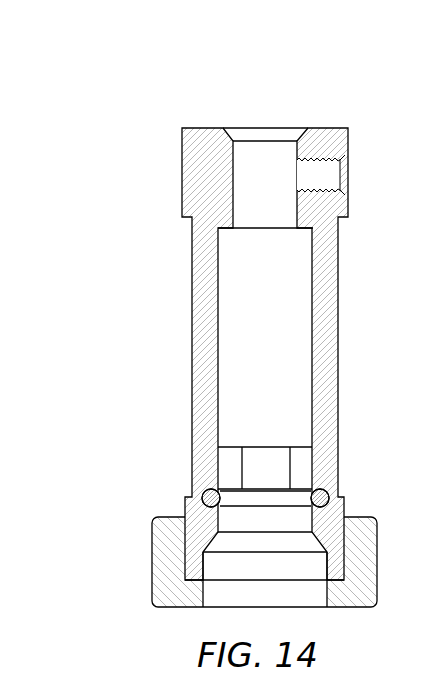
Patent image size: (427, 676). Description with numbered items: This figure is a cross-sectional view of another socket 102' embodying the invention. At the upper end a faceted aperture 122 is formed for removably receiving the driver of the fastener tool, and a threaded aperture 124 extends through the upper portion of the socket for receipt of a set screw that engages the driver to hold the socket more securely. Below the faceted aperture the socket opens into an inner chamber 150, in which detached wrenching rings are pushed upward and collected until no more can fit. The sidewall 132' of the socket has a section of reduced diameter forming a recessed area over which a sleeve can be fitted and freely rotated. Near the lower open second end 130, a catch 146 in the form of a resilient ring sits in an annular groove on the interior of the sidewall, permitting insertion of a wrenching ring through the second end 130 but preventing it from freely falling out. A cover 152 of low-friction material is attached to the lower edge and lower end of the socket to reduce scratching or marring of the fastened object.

The socket 102' is at (244, 334).
The faceted aperture 122 is at (262, 160).
The threaded aperture 124 is at (332, 178).
The inner chamber 150 is at (242, 355).
The sidewall 132' is at (302, 354).
The catch 146 is at (208, 497).
The cover 152 is at (170, 573).
The second end 130 is at (248, 565).